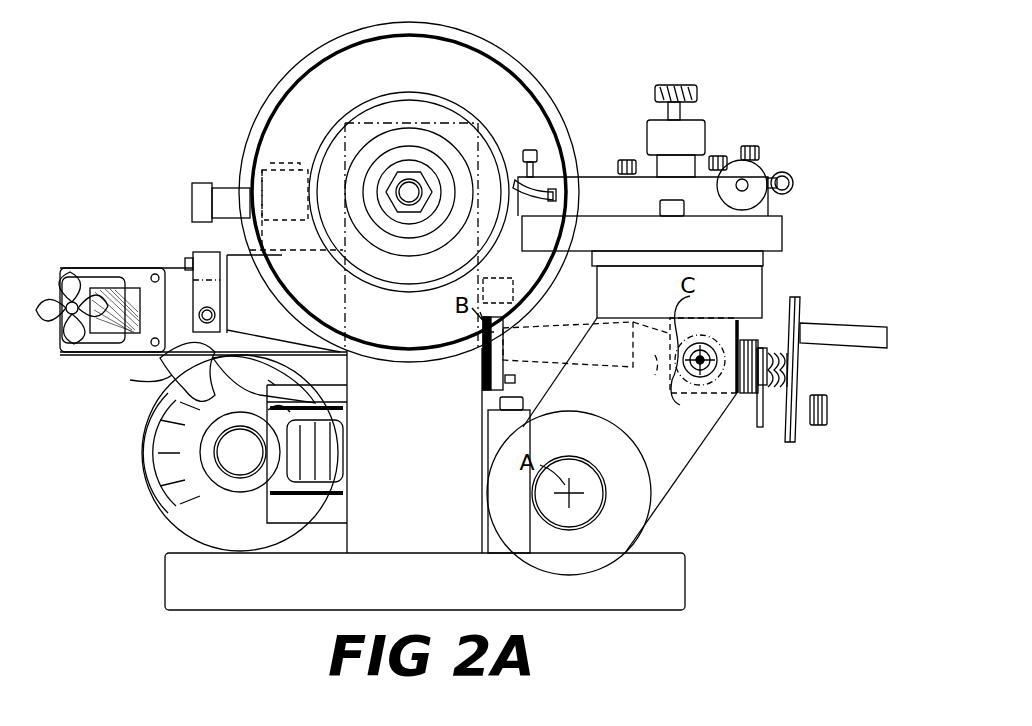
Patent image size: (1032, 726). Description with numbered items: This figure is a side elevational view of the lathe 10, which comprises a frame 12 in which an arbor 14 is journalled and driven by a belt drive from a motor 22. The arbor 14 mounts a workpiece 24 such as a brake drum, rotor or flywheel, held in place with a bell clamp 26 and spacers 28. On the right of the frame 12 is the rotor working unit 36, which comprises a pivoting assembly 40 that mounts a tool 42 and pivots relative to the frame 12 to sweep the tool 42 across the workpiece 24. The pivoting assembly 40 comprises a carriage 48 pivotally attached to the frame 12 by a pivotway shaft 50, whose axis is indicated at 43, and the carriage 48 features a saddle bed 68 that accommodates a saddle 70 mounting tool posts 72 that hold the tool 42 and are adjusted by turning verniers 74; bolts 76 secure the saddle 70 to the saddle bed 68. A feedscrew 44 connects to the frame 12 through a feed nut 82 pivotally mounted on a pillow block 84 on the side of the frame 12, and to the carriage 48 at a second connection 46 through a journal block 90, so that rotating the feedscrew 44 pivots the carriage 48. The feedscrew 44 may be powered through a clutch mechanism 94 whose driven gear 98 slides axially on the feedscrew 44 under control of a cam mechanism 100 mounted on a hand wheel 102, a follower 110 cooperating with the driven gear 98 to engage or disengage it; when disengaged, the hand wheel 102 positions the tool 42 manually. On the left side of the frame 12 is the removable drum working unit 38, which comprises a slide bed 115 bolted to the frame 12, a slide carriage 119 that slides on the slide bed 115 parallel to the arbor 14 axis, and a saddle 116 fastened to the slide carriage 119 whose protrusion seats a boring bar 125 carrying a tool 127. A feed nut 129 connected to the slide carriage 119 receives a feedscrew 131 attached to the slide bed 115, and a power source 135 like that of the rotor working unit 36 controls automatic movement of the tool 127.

The lathe 10 is at (240, 72).
The frame 12 is at (410, 443).
The arbor 14 is at (418, 196).
The motor 22 is at (150, 500).
The workpiece 24 is at (306, 101).
The bell clamp 26 is at (398, 142).
The spacers 28 is at (430, 172).
The rotor working unit 36 is at (797, 175).
The drum working unit 38 is at (130, 262).
The pivoting assembly 40 is at (700, 458).
The tool 42 is at (556, 196).
The axis line 43 is at (580, 480).
The feedscrew 44 is at (655, 370).
The second connection 46 is at (694, 380).
The carriage 48 is at (653, 463).
The pivotway shaft 50 is at (580, 508).
The saddle bed 68 is at (758, 258).
The saddle 70 is at (777, 227).
The tool posts 72 is at (628, 178).
The verniers 74 is at (758, 173).
The bolts 76 is at (632, 178).
The feed nut 82 is at (540, 325).
The pillow block 84 is at (495, 380).
The journal block 90 is at (730, 317).
The clutch mechanism 94 is at (735, 400).
The driven gear 98 is at (750, 345).
The cam mechanism 100 is at (818, 425).
The hand wheel 102 is at (800, 375).
The follower 110 is at (762, 428).
The slide bed 115 is at (238, 323).
The saddle 116 is at (228, 238).
The slide carriage 119 is at (212, 255).
The boring bar 125 is at (334, 140).
The tool 127 is at (290, 160).
The feed nut 129 is at (130, 380).
The feedscrew 131 is at (215, 333).
The power source 135 is at (95, 285).